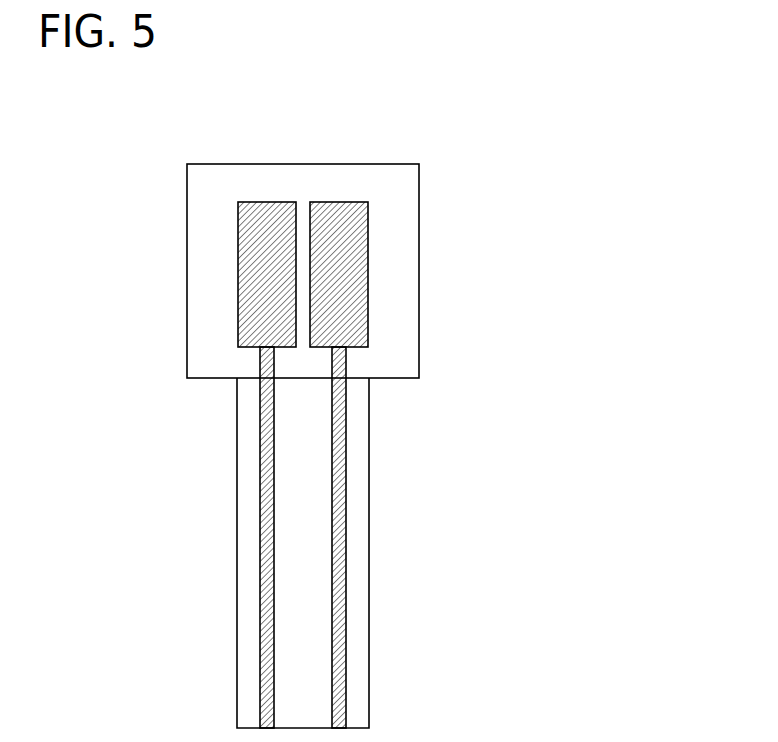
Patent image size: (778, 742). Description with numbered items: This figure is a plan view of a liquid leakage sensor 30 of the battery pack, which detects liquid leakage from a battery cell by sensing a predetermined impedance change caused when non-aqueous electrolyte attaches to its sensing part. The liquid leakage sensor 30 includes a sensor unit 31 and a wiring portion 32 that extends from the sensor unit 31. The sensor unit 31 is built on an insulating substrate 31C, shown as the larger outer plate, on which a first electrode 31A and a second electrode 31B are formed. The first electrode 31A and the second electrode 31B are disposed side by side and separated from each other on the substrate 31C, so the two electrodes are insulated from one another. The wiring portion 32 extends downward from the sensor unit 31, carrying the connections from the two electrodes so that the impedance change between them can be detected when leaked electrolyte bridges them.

The liquid leakage sensor 30 is at (313, 395).
The sensor unit 31 is at (313, 271).
The first electrode 31A is at (248, 273).
The second electrode 31B is at (357, 276).
The insulating substrate 31C is at (208, 215).
The wiring portion 32 is at (370, 524).